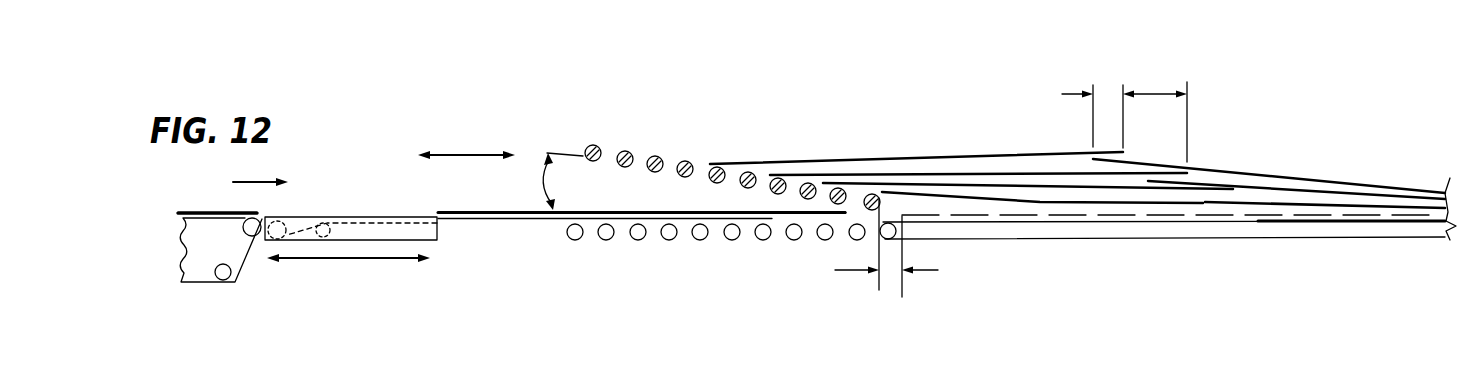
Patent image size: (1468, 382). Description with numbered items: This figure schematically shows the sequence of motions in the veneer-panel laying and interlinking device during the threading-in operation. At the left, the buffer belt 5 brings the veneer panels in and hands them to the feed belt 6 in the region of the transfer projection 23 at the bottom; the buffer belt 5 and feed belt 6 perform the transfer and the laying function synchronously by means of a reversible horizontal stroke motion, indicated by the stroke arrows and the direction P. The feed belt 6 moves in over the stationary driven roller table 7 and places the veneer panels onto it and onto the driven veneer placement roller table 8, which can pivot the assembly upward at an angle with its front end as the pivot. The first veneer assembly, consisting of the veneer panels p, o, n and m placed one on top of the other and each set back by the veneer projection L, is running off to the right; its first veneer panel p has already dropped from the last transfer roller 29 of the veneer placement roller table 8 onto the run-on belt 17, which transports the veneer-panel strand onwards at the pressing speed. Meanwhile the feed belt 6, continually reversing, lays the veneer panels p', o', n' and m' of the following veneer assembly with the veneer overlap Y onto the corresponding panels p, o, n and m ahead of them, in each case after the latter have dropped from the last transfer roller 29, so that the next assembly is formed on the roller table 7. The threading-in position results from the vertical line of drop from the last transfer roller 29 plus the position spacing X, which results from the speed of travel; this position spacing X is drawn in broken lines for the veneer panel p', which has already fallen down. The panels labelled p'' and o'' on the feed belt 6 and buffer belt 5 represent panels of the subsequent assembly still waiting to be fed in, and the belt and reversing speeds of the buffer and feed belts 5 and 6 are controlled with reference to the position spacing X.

The buffer belt 5 is at (206, 284).
The transfer projection 23 is at (256, 236).
The feed belt 6 is at (383, 234).
The roller table 7 is at (731, 241).
The veneer placement roller table 8 is at (626, 168).
The last transfer roller 29 is at (871, 210).
The run-on belt 17 is at (1075, 225).
The veneer panel m is at (1269, 126).
The veneer panel n is at (1296, 129).
The veneer panel o is at (1325, 134).
The veneer panel p is at (1351, 140).
The veneer panel m' is at (916, 112).
The veneer panel n' is at (978, 117).
The veneer panel o' is at (1028, 124).
The veneer panel p' is at (1042, 192).
The sheet p'' is at (772, 269).
The sheet o'' is at (217, 189).
The reciprocating direction P is at (466, 170).
The position spacing X is at (886, 247).
The veneer overlap Y is at (1092, 104).
The veneer projection L is at (1155, 111).